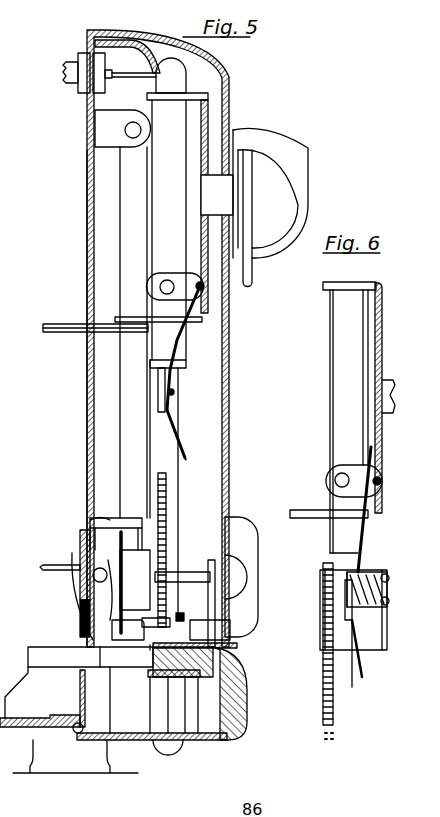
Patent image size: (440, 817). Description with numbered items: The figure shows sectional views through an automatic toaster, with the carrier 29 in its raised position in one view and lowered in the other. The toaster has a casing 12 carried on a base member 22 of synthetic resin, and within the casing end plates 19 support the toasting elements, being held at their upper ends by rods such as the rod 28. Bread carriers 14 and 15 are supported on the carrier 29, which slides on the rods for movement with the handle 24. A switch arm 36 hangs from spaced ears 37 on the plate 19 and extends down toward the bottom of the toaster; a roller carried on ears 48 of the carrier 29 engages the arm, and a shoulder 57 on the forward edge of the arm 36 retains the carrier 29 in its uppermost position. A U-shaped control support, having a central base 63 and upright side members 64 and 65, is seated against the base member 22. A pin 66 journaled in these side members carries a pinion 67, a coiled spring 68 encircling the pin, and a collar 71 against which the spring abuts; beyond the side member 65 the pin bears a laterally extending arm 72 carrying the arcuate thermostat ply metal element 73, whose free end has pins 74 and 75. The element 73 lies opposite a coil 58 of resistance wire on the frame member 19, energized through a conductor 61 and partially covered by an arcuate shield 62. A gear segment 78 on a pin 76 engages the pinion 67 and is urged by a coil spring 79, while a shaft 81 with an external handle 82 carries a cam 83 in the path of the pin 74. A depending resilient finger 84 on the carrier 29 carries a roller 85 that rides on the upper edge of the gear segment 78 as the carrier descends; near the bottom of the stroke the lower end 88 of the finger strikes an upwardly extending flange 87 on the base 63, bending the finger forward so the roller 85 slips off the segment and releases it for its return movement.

In FIG. 5, the casing 12 is at (231, 91).
In FIG. 5, the end plate 19 is at (89, 193).
In FIG. 5, the rod 28 is at (187, 82).
In FIG. 5, the carrier 29 is at (208, 131).
In FIG. 6, the carrier 29 is at (383, 326).
In FIG. 5, the switch arm 36 is at (153, 360).
In FIG. 5, the ears 37 is at (100, 128).
In FIG. 5, the handle 24 is at (281, 148).
In FIG. 5, the ears 48 is at (198, 296).
In FIG. 6, the ears 48 is at (352, 470).
In FIG. 5, the shoulder 57 is at (148, 294).
In FIG. 5, the bread carrier 15 is at (63, 322).
In FIG. 5, the upright side member 64 is at (186, 341).
In FIG. 6, the upright side member 64 is at (388, 632).
In FIG. 5, the roller 85 is at (173, 392).
In FIG. 6, the roller 85 is at (358, 616).
In FIG. 5, the lower end of finger 88 is at (184, 453).
In FIG. 6, the lower end of finger 88 is at (363, 664).
In FIG. 5, the gear segment 78 is at (166, 515).
In FIG. 6, the gear segment 78 is at (323, 684).
In FIG. 5, the thermostat ply metal element 73 is at (108, 518).
In FIG. 5, the cam 83 is at (130, 520).
In FIG. 5, the arcuate shield 62 is at (90, 520).
In FIG. 5, the pin 74 is at (79, 620).
In FIG. 5, the coil 58 is at (80, 553).
In FIG. 5, the conductor 61 is at (45, 568).
In FIG. 5, the pin 75 is at (74, 607).
In FIG. 5, the arm 72 is at (78, 637).
In FIG. 5, the handle 82 is at (246, 522).
In FIG. 5, the shaft 81 is at (190, 572).
In FIG. 5, the pin 66 is at (170, 612).
In FIG. 5, the coiled spring 68 is at (181, 621).
In FIG. 5, the collar 71 is at (250, 636).
In FIG. 5, the upright side member 65 is at (150, 645).
In FIG. 6, the upright side member 65 is at (322, 601).
In FIG. 5, the base member 22 is at (243, 705).
In FIG. 5, the pinion 67 is at (152, 648).
In FIG. 5, the central base 63 is at (200, 680).
In FIG. 6, the bread carrier 14 is at (315, 499).
In FIG. 6, the finger 84 is at (368, 536).
In FIG. 6, the pin 76 is at (390, 578).
In FIG. 6, the coil spring 79 is at (373, 576).
In FIG. 6, the flange 87 is at (352, 652).